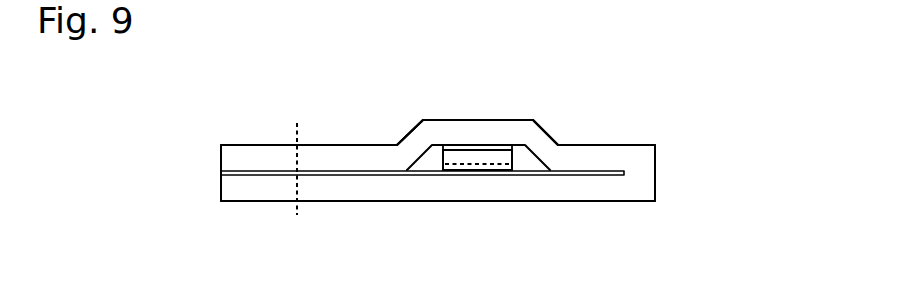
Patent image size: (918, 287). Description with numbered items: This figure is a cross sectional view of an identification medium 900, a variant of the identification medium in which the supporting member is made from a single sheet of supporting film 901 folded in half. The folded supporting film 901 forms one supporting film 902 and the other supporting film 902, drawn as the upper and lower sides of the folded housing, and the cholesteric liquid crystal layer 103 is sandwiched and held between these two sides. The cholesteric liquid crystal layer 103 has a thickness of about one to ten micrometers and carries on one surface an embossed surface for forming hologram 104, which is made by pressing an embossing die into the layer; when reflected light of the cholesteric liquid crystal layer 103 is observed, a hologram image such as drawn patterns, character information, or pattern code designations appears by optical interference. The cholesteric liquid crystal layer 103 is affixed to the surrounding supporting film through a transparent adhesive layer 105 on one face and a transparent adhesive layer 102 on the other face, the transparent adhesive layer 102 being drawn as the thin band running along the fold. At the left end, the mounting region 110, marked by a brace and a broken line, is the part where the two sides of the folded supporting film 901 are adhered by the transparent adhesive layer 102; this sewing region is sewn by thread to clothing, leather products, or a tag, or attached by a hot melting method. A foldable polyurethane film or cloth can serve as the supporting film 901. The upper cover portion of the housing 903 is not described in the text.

The identification medium 900 is at (574, 115).
The supporting film 901 is at (661, 163).
The supporting film 902 is at (360, 190).
The upper cover 903 is at (355, 146).
The transparent adhesive layer 102 is at (582, 174).
The cholesteric liquid crystal layer 103 is at (503, 155).
The embossed surface for forming hologram 104 is at (473, 164).
The transparent adhesive layer 105 is at (452, 147).
The mounting region 110 is at (297, 113).